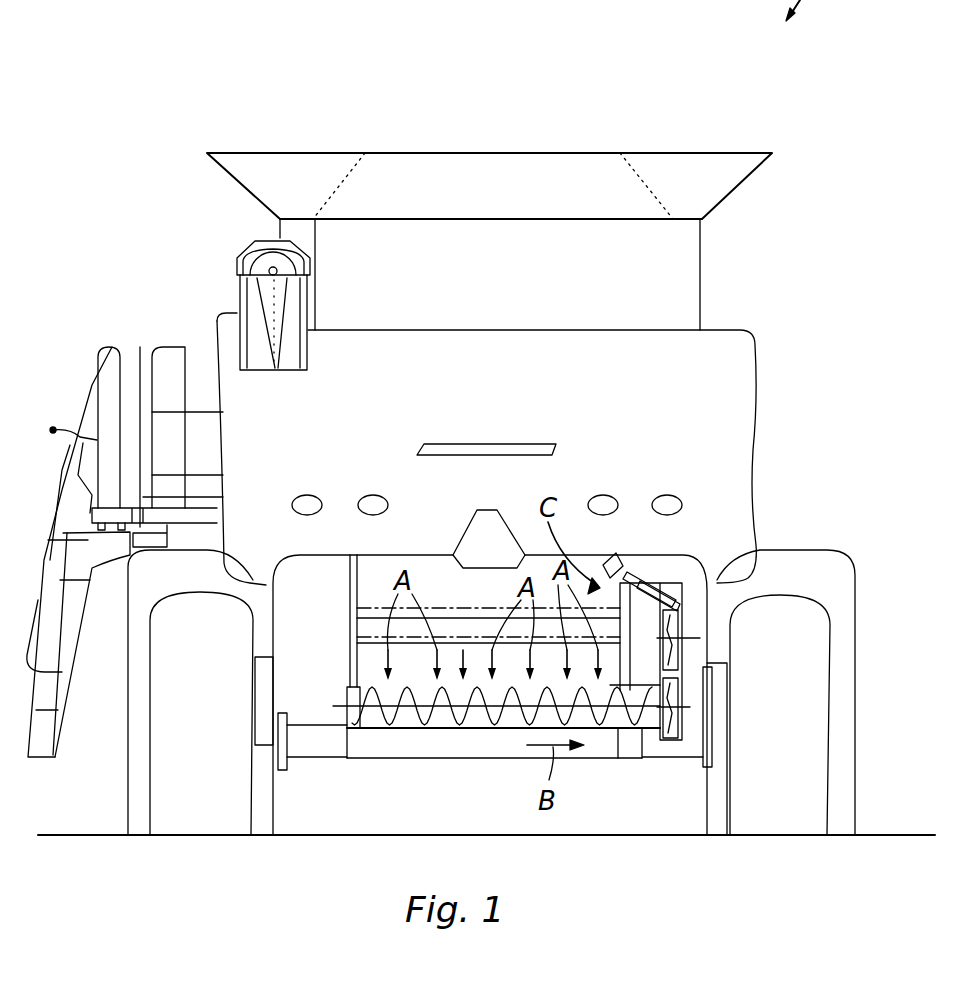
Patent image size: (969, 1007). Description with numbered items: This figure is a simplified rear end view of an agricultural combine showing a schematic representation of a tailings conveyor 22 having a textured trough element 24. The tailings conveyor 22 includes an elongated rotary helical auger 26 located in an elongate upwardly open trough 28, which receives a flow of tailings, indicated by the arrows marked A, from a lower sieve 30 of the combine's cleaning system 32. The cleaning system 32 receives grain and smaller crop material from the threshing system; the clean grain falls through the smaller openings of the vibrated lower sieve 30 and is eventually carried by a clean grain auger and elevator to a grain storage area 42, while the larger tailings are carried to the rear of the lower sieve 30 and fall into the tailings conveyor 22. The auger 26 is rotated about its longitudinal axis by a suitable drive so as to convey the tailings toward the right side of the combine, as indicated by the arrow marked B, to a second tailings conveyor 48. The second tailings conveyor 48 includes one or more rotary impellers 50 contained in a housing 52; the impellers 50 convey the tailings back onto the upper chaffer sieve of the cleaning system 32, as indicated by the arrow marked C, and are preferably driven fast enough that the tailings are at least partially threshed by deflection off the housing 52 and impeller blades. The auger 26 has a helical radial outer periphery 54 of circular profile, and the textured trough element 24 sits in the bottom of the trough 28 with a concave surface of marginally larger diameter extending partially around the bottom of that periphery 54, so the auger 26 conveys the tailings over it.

The tailings conveyor 22 is at (463, 653).
The textured trough element 24 is at (498, 737).
The elongated rotary helical auger 26 is at (618, 731).
The elongate upwardly open trough 28 is at (347, 708).
The lower sieve 30 is at (367, 633).
The cleaning system 32 is at (350, 600).
The grain storage area 42 is at (500, 153).
The second tailings conveyor 48 is at (686, 683).
The rotary impeller 50 is at (680, 618).
The housing 52 is at (688, 657).
The helical radial outer periphery 54 is at (417, 707).